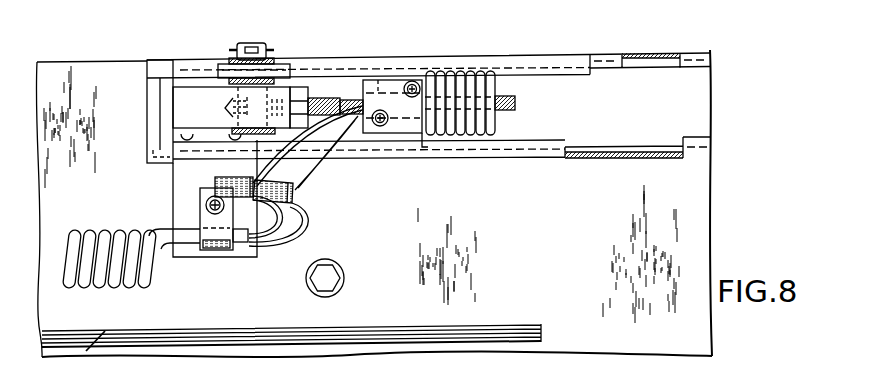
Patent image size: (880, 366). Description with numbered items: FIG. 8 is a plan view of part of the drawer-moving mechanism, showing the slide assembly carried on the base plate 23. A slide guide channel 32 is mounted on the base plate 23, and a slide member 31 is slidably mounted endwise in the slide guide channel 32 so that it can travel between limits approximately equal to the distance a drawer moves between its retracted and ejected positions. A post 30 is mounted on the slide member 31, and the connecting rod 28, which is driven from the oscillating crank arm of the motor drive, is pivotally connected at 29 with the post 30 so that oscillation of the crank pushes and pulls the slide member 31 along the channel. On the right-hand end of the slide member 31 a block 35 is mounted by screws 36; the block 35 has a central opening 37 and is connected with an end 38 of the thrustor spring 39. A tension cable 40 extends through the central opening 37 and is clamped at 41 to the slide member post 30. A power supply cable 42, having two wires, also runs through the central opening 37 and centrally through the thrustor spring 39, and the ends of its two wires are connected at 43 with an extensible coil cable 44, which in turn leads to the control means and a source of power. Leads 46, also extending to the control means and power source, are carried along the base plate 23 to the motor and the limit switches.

The base plate 23 is at (667, 208).
The connecting rod 28 is at (563, 67).
The pivotal connection 29 is at (249, 42).
The post 30 is at (203, 97).
The slide member 31 is at (166, 117).
The slide guide channel 32 is at (566, 158).
The block 35 is at (405, 124).
The screws 36 is at (409, 80).
The central opening 37 is at (378, 80).
The end of thrustor spring 38 is at (425, 105).
The thrustor spring 39 is at (483, 120).
The tension cable 40 is at (512, 99).
The clamp 41 is at (315, 97).
The power supply cable 42 is at (256, 184).
The connection 43 is at (222, 179).
The extensible coil cable 44 is at (145, 271).
The leads 46 is at (505, 330).